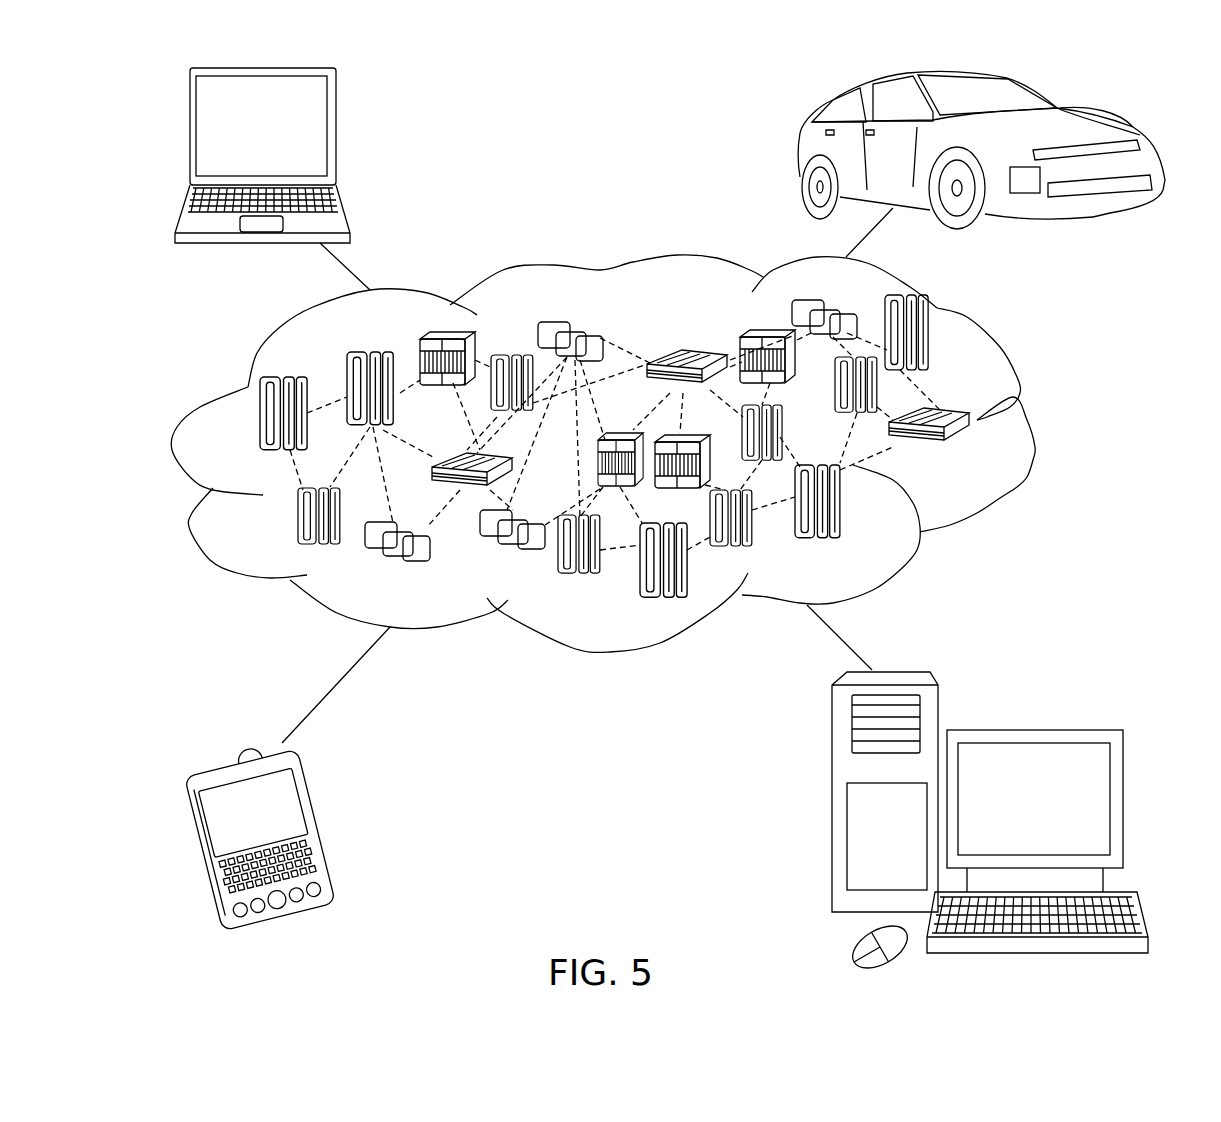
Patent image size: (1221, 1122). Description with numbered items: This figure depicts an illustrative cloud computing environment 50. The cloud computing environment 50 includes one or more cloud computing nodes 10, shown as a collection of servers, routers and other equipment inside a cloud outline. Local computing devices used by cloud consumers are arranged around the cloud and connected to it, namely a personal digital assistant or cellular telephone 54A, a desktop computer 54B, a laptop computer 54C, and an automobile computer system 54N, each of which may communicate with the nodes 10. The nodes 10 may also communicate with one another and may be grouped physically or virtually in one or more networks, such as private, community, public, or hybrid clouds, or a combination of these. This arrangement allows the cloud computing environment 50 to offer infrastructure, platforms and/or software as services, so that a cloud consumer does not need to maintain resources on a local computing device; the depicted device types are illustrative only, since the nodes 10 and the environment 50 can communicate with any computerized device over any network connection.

The cloud computing environment 50 is at (1033, 422).
The cloud computing node 10 is at (968, 455).
The personal digital assistant (PDA) or cellular telephone 54A is at (319, 832).
The desktop computer 54B is at (1032, 730).
The laptop computer 54C is at (335, 138).
The automobile computer system 54N is at (800, 157).